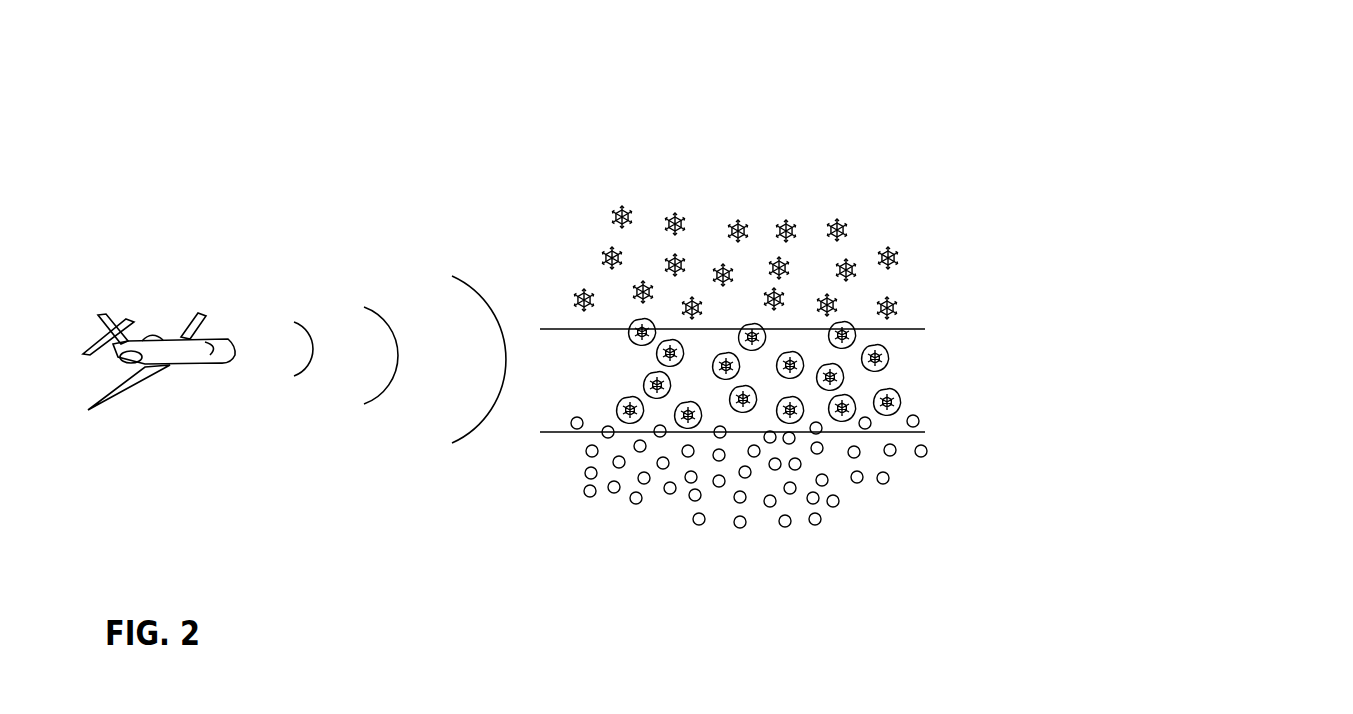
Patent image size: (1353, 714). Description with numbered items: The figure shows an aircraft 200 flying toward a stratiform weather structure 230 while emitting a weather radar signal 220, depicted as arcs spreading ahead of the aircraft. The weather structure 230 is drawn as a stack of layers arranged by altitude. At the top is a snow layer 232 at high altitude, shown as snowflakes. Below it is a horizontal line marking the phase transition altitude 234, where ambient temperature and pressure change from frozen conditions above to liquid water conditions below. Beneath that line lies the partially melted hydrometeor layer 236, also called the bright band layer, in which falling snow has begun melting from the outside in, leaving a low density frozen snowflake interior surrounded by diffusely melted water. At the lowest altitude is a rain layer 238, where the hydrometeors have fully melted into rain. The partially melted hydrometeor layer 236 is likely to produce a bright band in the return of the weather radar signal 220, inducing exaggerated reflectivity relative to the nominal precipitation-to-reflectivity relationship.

The aircraft 200 is at (144, 421).
The weather radar signal 220 is at (315, 212).
The weather structure 230 is at (613, 125).
The snow layer 232 is at (940, 234).
The phase transition altitude 234 is at (945, 330).
The partially melted hydrometeor layer 236 is at (955, 389).
The rain layer 238 is at (927, 480).